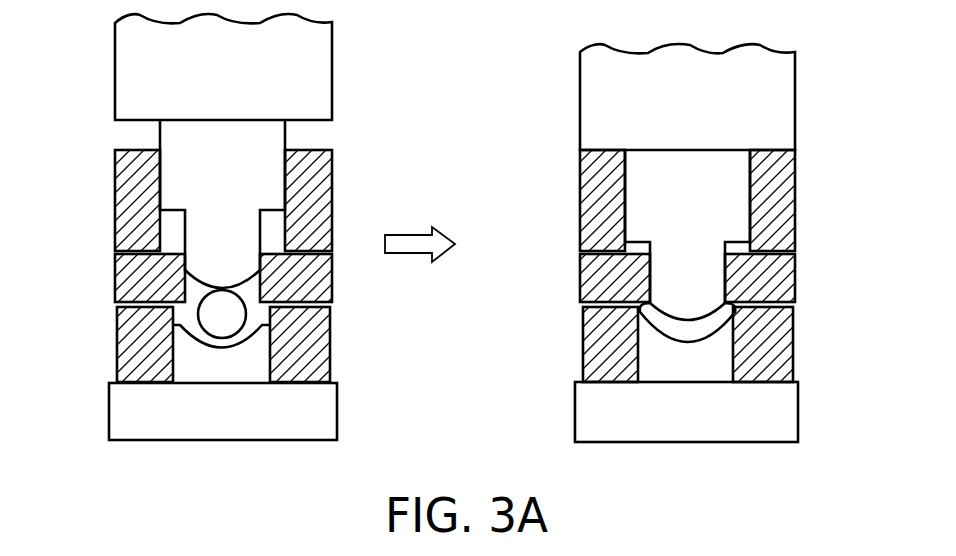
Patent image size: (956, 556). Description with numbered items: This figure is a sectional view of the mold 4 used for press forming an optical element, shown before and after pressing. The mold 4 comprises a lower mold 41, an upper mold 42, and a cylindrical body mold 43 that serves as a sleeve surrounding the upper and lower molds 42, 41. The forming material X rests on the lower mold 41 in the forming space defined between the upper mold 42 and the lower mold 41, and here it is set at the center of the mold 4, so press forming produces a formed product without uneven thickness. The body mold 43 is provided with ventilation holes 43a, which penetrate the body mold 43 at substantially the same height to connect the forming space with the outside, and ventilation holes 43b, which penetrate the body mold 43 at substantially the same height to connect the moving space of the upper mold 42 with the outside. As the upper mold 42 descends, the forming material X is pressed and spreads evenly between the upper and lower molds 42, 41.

The mold 4 is at (358, 132).
The lower mold 41 is at (120, 410).
The upper mold 42 is at (170, 137).
The body mold 43 is at (443, 266).
The ventilation holes 43a is at (117, 302).
The ventilation holes 43b is at (118, 253).
The forming material X is at (225, 327).